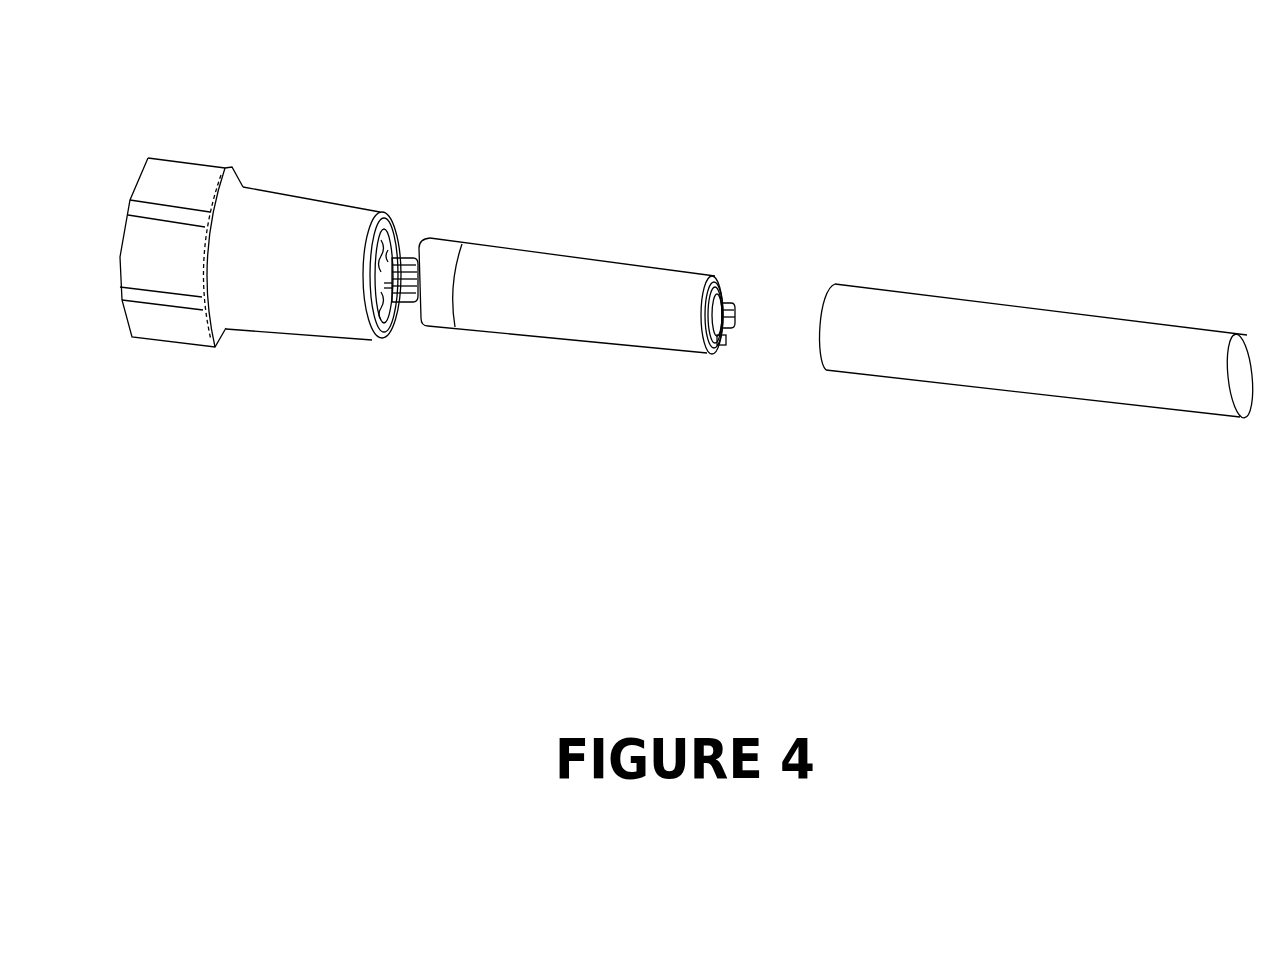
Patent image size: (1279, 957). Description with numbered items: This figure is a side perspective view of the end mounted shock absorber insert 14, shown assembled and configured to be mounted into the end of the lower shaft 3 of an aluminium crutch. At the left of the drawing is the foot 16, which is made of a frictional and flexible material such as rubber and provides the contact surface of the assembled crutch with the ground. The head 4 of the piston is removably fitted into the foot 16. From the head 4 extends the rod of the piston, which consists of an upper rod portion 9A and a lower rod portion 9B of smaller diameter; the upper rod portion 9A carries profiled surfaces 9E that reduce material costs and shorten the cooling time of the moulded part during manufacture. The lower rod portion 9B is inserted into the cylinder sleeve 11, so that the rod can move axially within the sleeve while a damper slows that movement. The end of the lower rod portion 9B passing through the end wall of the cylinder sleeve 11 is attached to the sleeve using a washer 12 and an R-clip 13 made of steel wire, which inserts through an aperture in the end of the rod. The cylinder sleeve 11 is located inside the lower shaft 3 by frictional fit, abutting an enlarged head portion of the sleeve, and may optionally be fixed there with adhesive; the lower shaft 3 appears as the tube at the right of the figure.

The lower shaft 3 is at (1102, 325).
The piston head 4 is at (398, 253).
The upper rod portion 9A is at (405, 255).
The lower rod portion 9B is at (733, 305).
The profiled surfaces 9E is at (397, 308).
The cylinder sleeve 11 is at (592, 290).
The washer 12 is at (715, 350).
The R-clip 13 is at (725, 342).
The shock absorber insert 14 is at (842, 55).
The foot 16 is at (175, 180).